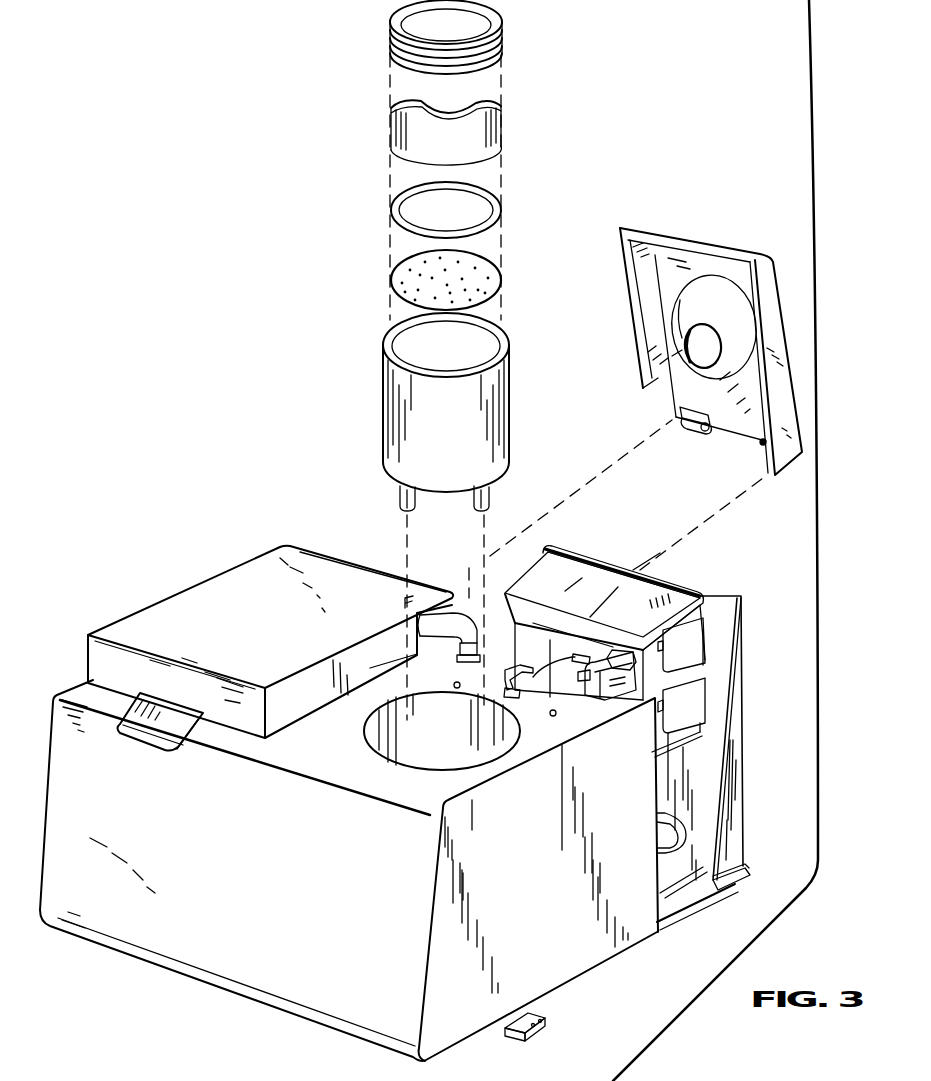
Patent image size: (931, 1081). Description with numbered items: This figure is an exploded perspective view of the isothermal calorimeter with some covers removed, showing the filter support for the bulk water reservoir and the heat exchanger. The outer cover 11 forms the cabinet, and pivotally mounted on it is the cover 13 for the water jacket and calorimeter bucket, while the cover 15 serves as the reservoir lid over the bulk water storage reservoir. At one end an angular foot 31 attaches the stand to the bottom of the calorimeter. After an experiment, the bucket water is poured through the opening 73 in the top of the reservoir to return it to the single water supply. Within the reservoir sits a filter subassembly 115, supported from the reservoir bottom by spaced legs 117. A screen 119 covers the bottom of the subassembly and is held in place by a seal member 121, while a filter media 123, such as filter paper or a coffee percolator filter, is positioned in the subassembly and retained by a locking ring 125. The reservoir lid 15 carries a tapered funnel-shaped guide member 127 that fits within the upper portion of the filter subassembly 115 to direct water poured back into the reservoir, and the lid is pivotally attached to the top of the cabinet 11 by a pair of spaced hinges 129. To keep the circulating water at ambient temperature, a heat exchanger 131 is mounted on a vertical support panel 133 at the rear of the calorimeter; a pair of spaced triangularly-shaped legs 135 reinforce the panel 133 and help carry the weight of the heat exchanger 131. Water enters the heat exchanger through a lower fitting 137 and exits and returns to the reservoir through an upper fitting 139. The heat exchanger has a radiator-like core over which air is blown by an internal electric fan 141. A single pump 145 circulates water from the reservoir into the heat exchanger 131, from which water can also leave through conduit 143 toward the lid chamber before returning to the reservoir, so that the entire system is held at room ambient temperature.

The outer cover 11 is at (187, 957).
The cover 13 is at (228, 578).
The cover 15 is at (702, 342).
The angular foot 31 is at (537, 1007).
The opening 73 is at (368, 741).
The filter subassembly 115 is at (386, 423).
The spaced legs 117 is at (403, 503).
The screen 119 is at (392, 282).
The seal member 121 is at (392, 208).
The filter media 123 is at (390, 120).
The locking ring 125 is at (390, 36).
The tapered funnel-shaped guide member 127 is at (680, 322).
The spaced hinges 129 is at (760, 443).
The heat exchanger 131 is at (678, 588).
The vertical support panel 133 is at (718, 608).
The triangularly-shaped legs 135 is at (553, 547).
The lower fitting 137 is at (700, 702).
The upper fitting 139 is at (697, 640).
The internal electric fan 141 is at (503, 592).
The conduit 143 is at (463, 613).
The pump 145 is at (683, 800).